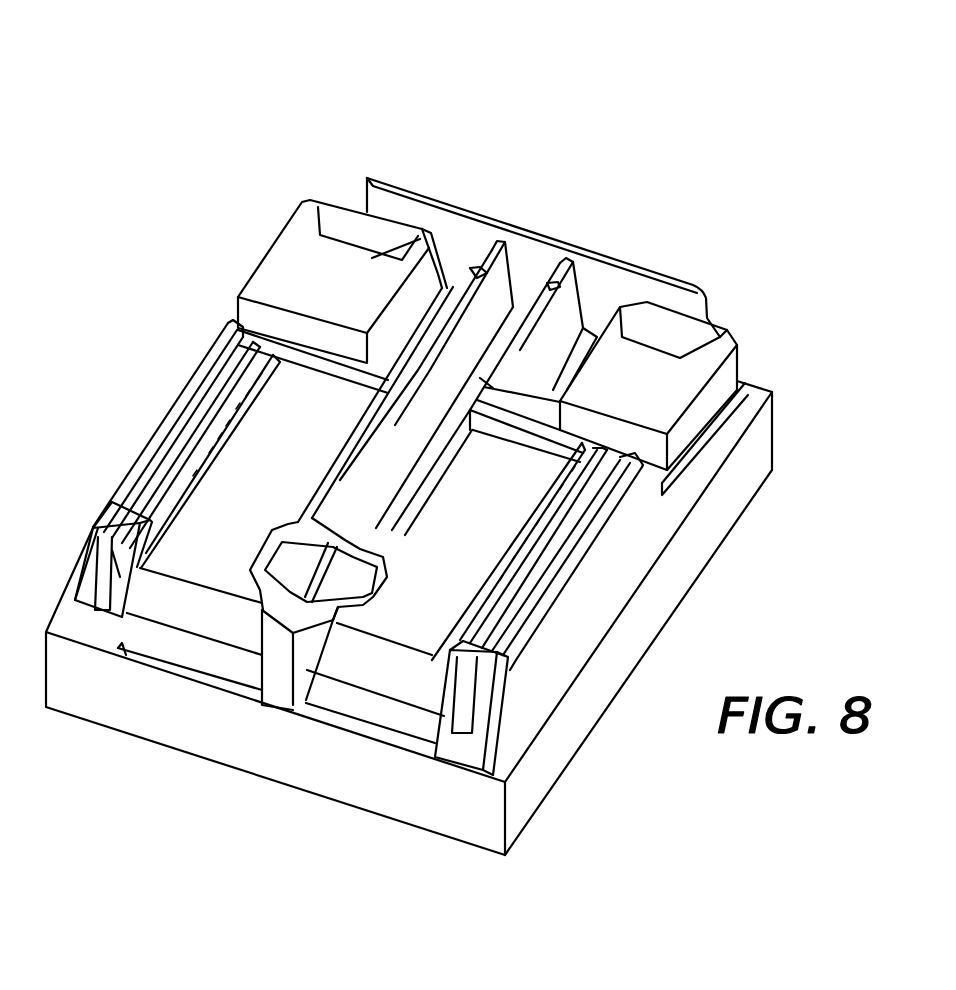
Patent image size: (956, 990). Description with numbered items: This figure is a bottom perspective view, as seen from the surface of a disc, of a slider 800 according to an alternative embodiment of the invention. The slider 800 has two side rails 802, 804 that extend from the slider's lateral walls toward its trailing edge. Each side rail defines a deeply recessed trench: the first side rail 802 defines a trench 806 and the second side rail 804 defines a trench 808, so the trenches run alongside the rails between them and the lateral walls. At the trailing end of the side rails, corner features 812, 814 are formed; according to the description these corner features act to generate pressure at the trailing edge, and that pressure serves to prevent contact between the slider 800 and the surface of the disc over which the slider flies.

The slider 800 is at (409, 516).
The side rail 802 is at (153, 430).
The side rail 804 is at (560, 592).
The deeply recessed trench 806 is at (213, 383).
The deeply recessed trench 808 is at (577, 523).
The corner feature 812 is at (97, 620).
The corner feature 814 is at (463, 743).